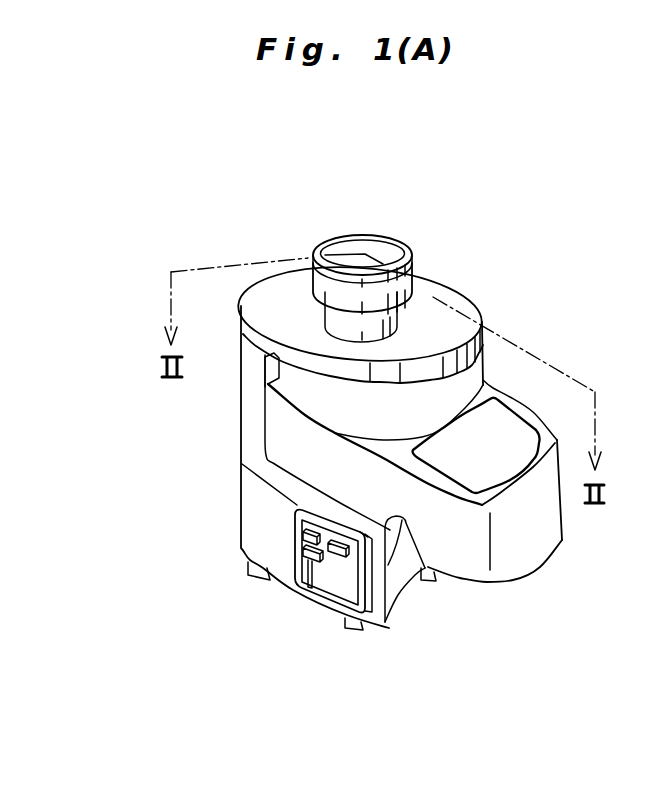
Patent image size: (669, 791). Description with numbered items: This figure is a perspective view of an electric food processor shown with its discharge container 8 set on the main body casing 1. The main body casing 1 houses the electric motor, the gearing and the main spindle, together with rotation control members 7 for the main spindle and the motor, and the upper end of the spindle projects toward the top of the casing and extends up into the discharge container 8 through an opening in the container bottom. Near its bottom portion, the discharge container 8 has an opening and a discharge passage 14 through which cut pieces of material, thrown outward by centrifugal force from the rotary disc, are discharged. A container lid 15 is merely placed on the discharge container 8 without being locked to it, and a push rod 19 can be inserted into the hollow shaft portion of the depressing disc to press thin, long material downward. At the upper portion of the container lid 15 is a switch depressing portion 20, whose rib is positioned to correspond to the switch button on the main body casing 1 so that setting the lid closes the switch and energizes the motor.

The main body casing 1 is at (263, 532).
The rotation control members 7 is at (337, 582).
The discharge container 8 is at (457, 390).
The discharge passage 14 is at (547, 523).
The container lid 15 is at (450, 293).
The push rod 19 is at (405, 247).
The switch depressing portion 20 is at (262, 297).